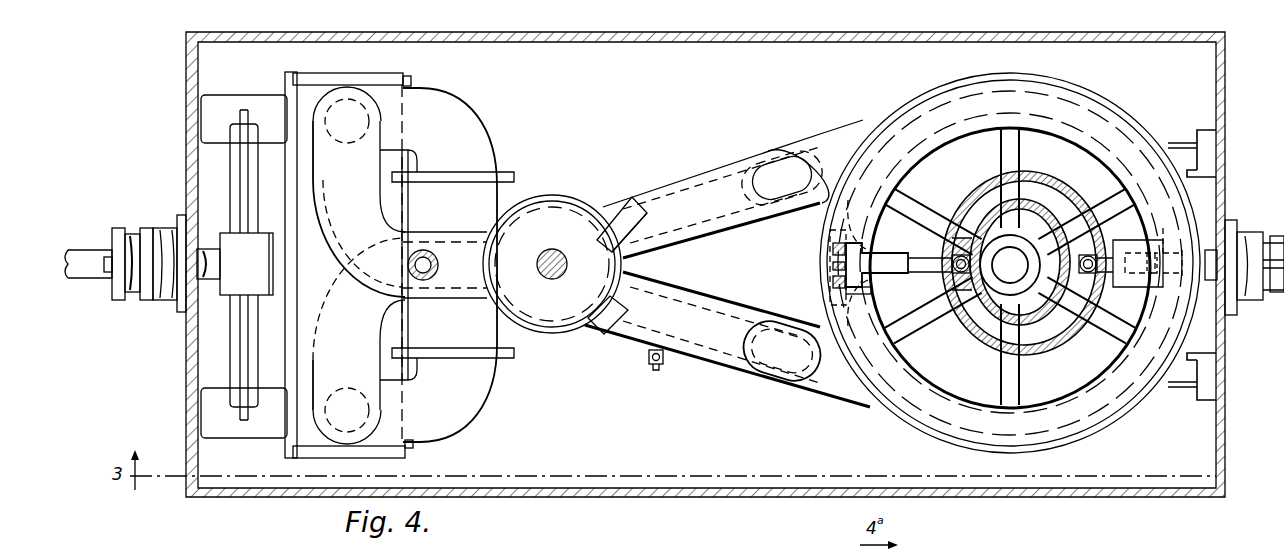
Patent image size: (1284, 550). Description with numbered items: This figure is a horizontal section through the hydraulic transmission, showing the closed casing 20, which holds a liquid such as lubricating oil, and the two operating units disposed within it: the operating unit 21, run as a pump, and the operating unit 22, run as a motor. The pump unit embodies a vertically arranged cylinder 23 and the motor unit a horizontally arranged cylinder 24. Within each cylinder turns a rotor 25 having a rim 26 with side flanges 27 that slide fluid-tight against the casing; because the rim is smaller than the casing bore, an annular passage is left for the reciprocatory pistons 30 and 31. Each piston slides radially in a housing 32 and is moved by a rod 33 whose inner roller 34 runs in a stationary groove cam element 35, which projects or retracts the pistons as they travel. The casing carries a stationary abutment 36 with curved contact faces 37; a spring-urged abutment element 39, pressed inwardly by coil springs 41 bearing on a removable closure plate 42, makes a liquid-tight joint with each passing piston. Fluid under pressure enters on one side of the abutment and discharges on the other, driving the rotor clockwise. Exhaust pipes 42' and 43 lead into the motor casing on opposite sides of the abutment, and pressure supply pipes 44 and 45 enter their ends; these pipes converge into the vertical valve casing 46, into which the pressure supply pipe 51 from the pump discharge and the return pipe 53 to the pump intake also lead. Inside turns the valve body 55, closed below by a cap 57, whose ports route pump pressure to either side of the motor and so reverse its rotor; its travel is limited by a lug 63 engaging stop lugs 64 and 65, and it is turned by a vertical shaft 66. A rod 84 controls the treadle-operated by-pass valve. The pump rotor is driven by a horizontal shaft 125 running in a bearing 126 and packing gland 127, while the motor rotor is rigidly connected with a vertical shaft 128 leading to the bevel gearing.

The closed casing 20 is at (572, 498).
The operating unit 21 is at (377, 70).
The operating unit 22 is at (1010, 254).
The cylinder 23 is at (303, 84).
The cylinder 24 is at (955, 82).
The rotor 25 is at (1085, 118).
The rim 26 is at (1080, 140).
The side flanges 27 is at (412, 82).
The reciprocatory piston 30 is at (880, 294).
The reciprocatory piston 31 is at (1170, 256).
The housing 32 is at (895, 237).
The rod 33 is at (920, 258).
The roller 34 is at (952, 268).
The groove cam element 35 is at (990, 182).
The stationary abutment 36 is at (822, 222).
The curved contact faces 37 is at (864, 232).
The reciprocatory abutment element 39 is at (831, 250).
The compressible coil springs 41 is at (831, 267).
The removable closure plate 42 is at (807, 285).
The pipe 42' is at (841, 120).
The pipe 43 is at (845, 400).
The pipe 44 is at (705, 180).
The pipe 45 is at (716, 356).
The valve casing 46 is at (552, 237).
The pressure supply pipe 51 is at (447, 250).
The pipe 53 is at (359, 265).
The valve body 55 is at (565, 240).
The cap 57 is at (560, 232).
The lug 63 is at (646, 216).
The stop lug 64 is at (612, 200).
The stop lug 65 is at (606, 334).
The vertical shaft 66 is at (553, 280).
The rod 84 is at (654, 368).
The horizontal shaft 125 is at (80, 279).
The bearing 126 is at (243, 256).
The packing gland 127 is at (164, 301).
The vertical shaft 128 is at (1004, 272).